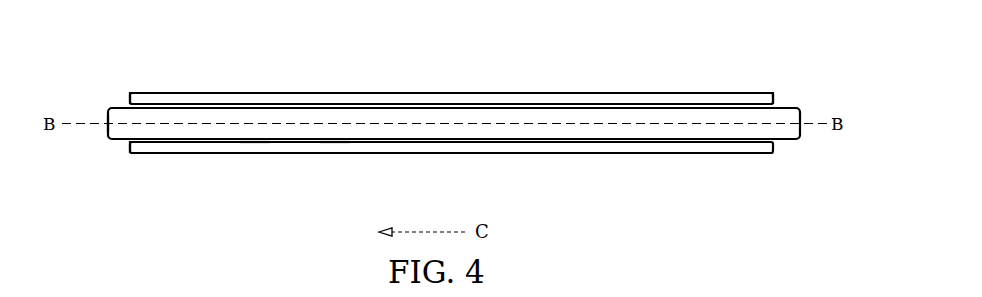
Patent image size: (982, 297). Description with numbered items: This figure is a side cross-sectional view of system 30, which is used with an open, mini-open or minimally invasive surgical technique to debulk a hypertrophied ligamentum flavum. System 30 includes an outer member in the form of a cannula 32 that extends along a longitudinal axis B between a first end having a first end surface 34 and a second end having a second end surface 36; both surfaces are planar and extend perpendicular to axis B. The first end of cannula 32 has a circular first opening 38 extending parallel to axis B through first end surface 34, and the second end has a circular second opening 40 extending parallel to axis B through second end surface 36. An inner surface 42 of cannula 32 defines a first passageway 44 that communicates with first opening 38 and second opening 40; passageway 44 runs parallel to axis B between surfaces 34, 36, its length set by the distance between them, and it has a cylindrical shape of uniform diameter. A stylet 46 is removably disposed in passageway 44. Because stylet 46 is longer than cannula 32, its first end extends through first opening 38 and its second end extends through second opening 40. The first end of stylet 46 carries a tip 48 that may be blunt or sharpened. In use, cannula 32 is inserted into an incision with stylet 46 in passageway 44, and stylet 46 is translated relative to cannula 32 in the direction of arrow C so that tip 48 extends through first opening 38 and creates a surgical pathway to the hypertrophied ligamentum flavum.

The system 30 is at (440, 126).
The cannula 32 is at (485, 94).
The first end surface 34 is at (129, 93).
The second end surface 36 is at (777, 107).
The first opening 38 is at (128, 143).
The second opening 40 is at (783, 106).
The inner surface 42 is at (504, 139).
The first passageway 44 is at (258, 141).
The stylet 46 is at (337, 141).
The tip 48 is at (105, 127).